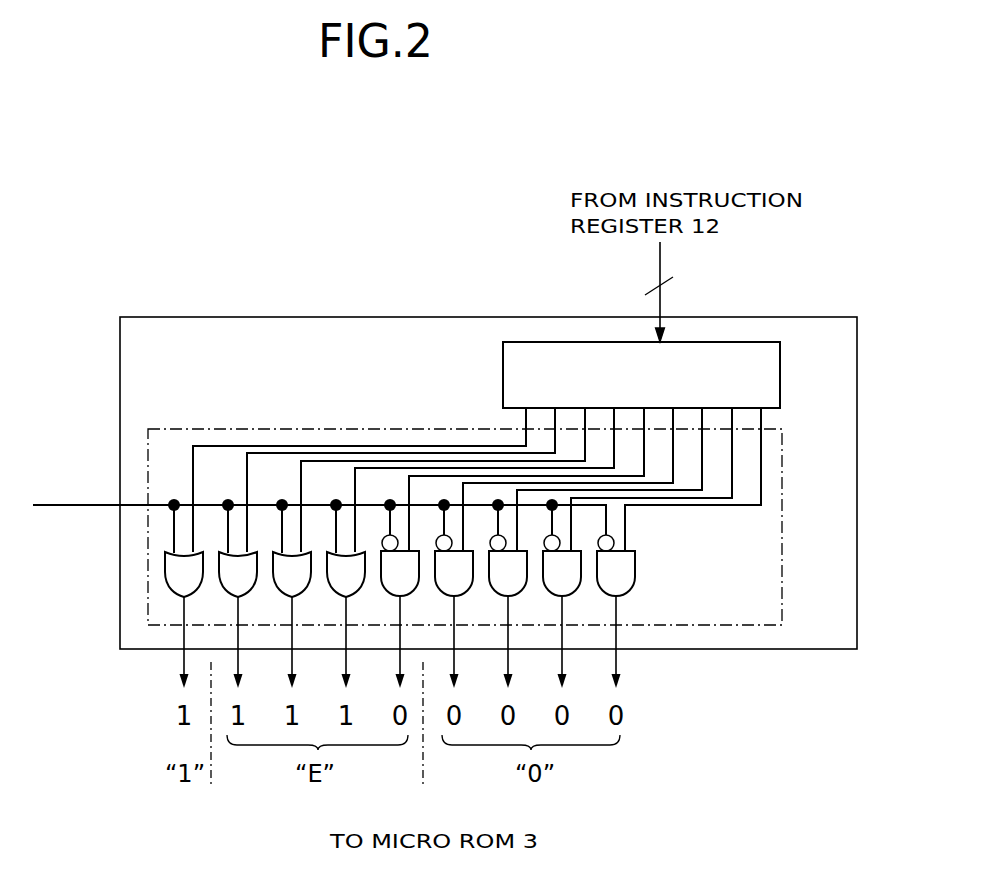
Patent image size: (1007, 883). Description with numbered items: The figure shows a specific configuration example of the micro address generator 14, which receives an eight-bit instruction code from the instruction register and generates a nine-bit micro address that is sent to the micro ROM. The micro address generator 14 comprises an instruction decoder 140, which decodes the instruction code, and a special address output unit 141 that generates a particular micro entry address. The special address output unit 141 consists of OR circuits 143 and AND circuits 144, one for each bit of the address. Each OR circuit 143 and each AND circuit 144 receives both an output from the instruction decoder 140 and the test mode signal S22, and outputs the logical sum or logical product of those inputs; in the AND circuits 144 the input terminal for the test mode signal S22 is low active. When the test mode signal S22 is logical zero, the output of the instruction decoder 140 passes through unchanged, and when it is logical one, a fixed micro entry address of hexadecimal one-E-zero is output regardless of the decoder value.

The micro address generator 14 is at (795, 650).
The instruction decoder 140 is at (713, 342).
The special address output unit 141 is at (782, 487).
The OR circuit 143 is at (165, 578).
The AND circuit 144 is at (635, 575).
The test mode signal S22 is at (60, 503).